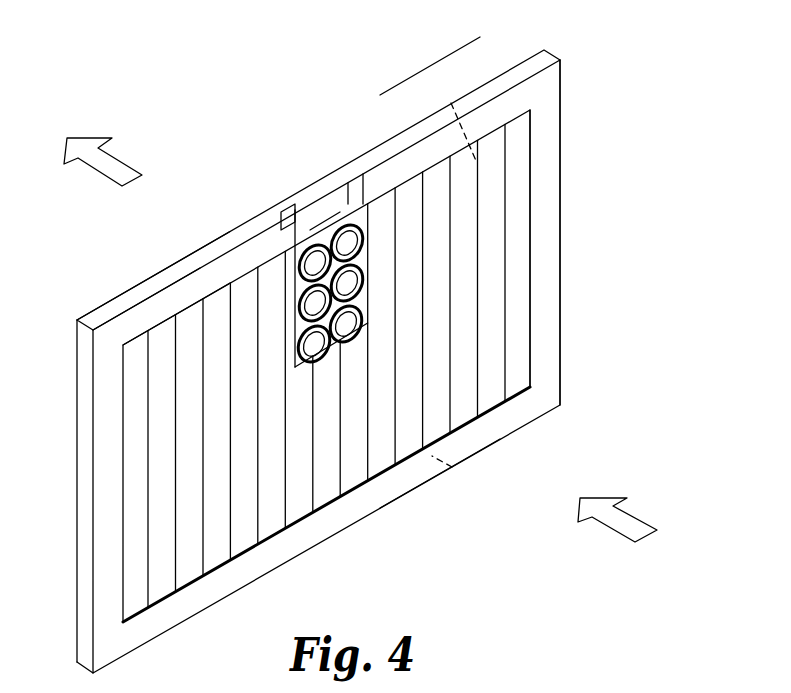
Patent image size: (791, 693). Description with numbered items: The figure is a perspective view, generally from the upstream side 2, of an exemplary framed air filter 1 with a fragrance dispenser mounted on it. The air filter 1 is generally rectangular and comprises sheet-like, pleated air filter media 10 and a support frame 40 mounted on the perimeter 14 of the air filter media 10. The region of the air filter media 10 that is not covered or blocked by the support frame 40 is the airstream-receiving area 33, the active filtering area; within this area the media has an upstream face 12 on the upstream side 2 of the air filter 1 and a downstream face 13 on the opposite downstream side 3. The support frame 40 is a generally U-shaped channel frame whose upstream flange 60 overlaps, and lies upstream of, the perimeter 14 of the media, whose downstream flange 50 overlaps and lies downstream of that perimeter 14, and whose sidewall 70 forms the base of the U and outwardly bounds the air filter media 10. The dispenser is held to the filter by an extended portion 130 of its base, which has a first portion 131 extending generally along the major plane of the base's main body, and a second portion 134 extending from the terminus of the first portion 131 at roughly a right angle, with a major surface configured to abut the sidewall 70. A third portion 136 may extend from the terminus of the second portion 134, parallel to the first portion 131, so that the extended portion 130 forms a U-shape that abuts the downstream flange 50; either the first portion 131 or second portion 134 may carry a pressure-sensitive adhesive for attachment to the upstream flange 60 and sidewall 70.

The air filter 1 is at (597, 55).
The upstream side 2 is at (545, 546).
The downstream side 3 is at (408, 73).
The air filter media 10 is at (139, 426).
The upstream face 12 is at (138, 492).
The downstream face 13 is at (451, 103).
The perimeter 14 is at (452, 467).
The airstream-receiving area 33 is at (494, 293).
The support frame 40 is at (563, 143).
The downstream flange 50 is at (128, 316).
The upstream flange 60 is at (180, 292).
The sidewall 70 is at (193, 262).
The extended portion 130 is at (348, 205).
The first portion 131 is at (365, 205).
The second portion 134 is at (322, 188).
The third portion 136 is at (280, 213).